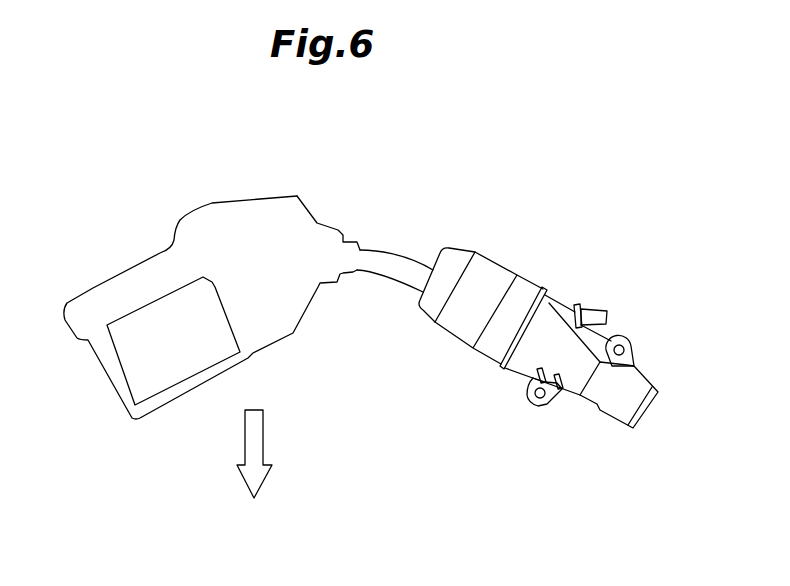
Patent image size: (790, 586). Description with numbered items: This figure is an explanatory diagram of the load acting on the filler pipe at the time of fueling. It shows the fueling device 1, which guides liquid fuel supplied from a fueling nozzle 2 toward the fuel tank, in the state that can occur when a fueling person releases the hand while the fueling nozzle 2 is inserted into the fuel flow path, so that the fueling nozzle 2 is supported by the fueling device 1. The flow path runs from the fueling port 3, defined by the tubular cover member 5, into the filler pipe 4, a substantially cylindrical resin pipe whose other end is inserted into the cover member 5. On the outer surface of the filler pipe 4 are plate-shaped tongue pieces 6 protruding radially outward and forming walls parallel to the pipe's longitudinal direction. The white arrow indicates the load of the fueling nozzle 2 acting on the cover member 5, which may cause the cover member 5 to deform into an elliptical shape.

The fueling device 1 is at (520, 307).
The fueling nozzle 2 is at (388, 263).
The fueling port 3 is at (442, 260).
The filler pipe 4 is at (583, 352).
The cover member 5 is at (488, 258).
The tongue pieces 6 is at (632, 341).